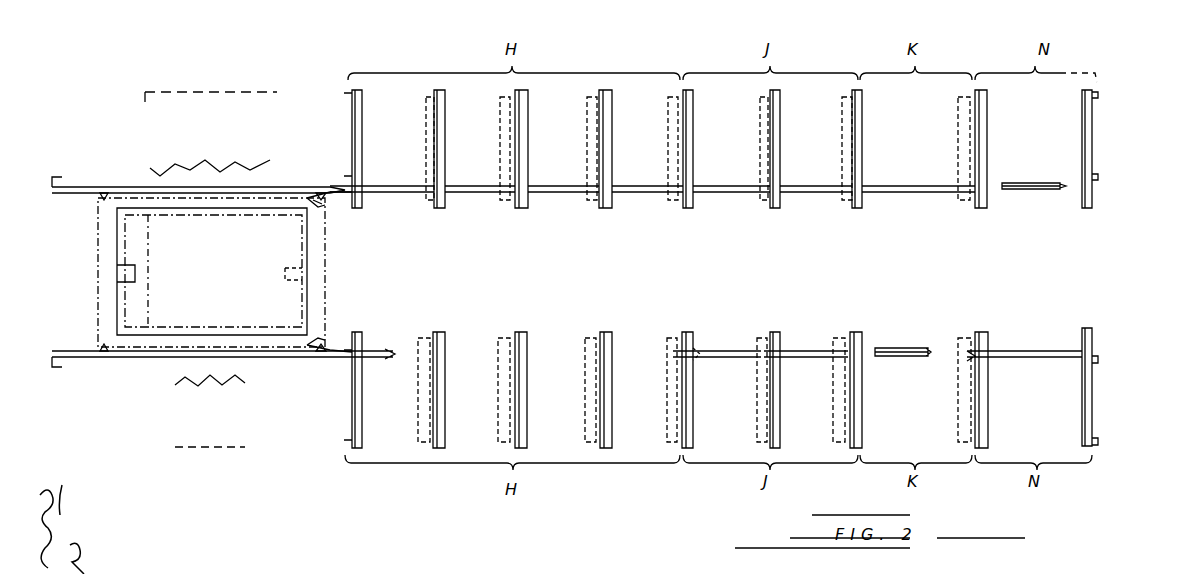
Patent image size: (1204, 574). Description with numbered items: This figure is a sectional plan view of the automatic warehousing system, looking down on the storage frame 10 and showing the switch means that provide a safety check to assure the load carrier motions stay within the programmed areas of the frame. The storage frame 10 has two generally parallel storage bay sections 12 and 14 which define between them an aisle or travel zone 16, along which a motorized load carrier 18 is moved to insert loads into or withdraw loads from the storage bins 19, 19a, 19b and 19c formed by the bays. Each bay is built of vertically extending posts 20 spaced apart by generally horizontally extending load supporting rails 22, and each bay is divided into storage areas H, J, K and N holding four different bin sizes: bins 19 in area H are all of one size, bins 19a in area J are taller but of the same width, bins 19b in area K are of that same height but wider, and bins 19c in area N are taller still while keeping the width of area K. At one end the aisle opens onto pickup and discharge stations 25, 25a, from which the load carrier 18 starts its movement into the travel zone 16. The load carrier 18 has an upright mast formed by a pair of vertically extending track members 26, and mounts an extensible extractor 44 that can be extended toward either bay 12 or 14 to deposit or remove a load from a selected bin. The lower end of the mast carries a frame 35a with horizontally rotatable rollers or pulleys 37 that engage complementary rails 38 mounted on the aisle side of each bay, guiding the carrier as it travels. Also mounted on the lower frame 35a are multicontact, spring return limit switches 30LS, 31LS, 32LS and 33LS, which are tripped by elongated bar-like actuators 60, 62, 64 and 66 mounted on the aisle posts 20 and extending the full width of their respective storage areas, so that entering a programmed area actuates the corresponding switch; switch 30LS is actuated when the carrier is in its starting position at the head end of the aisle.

The storage frame 10 is at (1112, 72).
The storage bay section 12 is at (1088, 208).
The storage bay section 14 is at (985, 322).
The aisle or travel zone 16 is at (747, 268).
The load carrier 18 is at (90, 303).
The storage bin 19 is at (404, 150).
The storage bin 19a is at (735, 143).
The storage bin 19b is at (928, 159).
The storage bin 19c is at (1048, 139).
The vertically extending post 20 is at (515, 99).
The load supporting rail 22 is at (668, 113).
The pickup and discharge station 25 is at (240, 98).
The pickup and discharge station 25a is at (175, 422).
The vertically extending track member 26 is at (135, 272).
The limit switch 30LS is at (313, 200).
The limit switch 31LS is at (313, 340).
The limit switch 32LS is at (376, 258).
The limit switch 33LS is at (376, 310).
The lower frame 35a is at (103, 252).
The roller or pulley 37 is at (108, 190).
The rail 38 is at (76, 186).
The load supporting platform or extractor 44 is at (225, 283).
The actuator 60 is at (396, 193).
The actuator 62 is at (722, 351).
The actuator 64 is at (925, 193).
The actuator 66 is at (1035, 351).